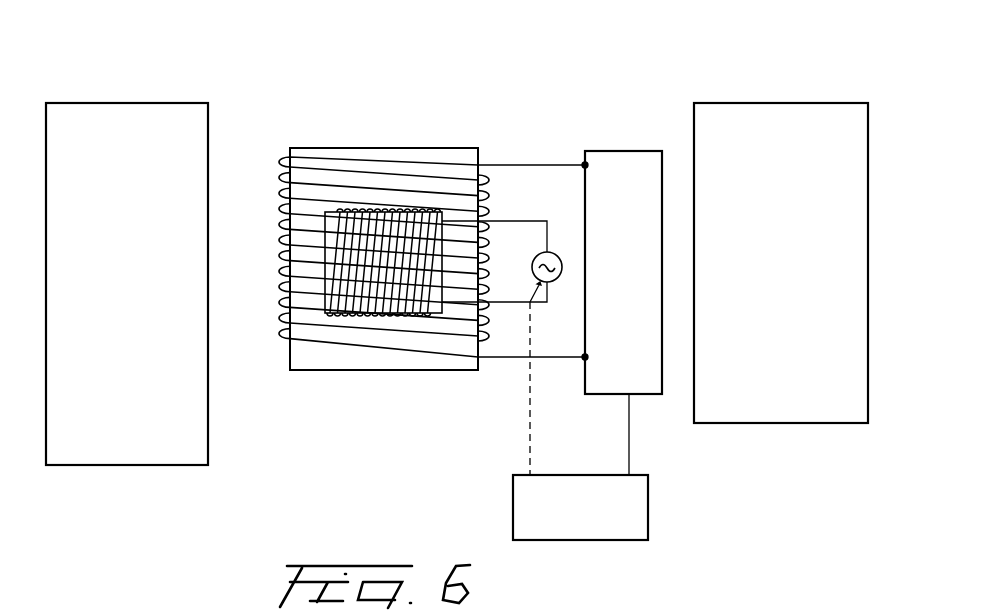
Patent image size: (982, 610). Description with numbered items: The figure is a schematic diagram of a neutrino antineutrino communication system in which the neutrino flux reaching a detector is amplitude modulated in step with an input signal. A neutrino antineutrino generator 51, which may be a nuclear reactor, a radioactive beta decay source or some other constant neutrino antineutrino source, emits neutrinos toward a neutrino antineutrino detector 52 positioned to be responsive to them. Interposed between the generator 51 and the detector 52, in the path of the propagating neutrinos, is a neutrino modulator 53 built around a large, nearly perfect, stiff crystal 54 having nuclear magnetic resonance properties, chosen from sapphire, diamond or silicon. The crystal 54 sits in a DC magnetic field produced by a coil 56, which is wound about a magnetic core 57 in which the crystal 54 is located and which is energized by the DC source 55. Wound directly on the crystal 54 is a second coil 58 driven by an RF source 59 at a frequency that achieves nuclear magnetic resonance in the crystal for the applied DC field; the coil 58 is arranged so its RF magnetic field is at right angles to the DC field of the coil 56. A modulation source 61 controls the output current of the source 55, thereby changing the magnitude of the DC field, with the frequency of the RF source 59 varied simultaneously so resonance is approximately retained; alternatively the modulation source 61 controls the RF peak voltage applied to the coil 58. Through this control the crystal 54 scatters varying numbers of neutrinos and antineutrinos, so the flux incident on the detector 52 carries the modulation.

The neutrino antineutrino generator 51 is at (141, 108).
The neutrino antineutrino detector 52 is at (777, 113).
The neutrino modulator 53 is at (405, 90).
The crystal 54 is at (327, 217).
The source 55 is at (627, 155).
The coil 56 is at (283, 161).
The magnetic core 57 is at (470, 160).
The coil 58 is at (338, 302).
The RF source 59 is at (555, 258).
The modulation source 61 is at (635, 512).